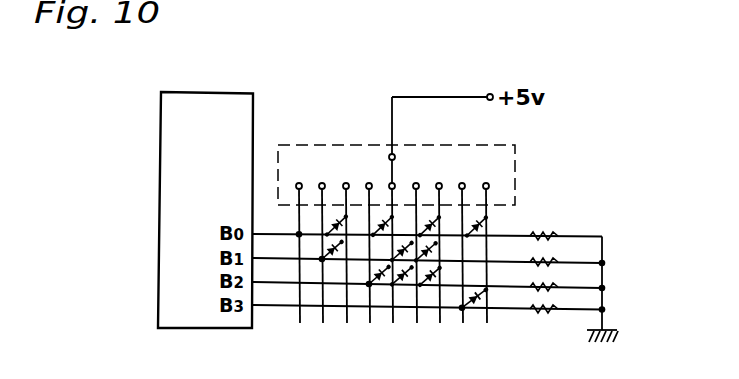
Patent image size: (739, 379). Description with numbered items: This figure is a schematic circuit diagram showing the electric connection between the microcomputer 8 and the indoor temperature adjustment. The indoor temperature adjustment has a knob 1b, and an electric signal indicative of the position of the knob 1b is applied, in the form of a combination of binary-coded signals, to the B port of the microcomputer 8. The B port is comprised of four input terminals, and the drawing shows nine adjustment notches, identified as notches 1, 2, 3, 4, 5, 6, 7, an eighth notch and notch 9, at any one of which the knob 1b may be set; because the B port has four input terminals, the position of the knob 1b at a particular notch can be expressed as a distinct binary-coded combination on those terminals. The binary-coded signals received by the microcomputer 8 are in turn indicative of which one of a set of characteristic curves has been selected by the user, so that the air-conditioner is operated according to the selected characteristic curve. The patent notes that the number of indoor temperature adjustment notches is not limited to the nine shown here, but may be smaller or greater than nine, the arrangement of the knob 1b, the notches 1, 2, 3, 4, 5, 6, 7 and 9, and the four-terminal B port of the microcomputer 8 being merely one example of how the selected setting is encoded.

The microcomputer 8 is at (228, 94).
The knob 1b is at (396, 215).
The connector terminal 1 is at (299, 241).
The connector terminal 2 is at (322, 241).
The connector terminal 3 is at (346, 241).
The connector terminal 4 is at (369, 241).
The connector terminal 5 is at (398, 241).
The connector terminal 6 is at (418, 241).
The connector terminal 7 is at (439, 241).
The connector terminal 9 is at (486, 241).